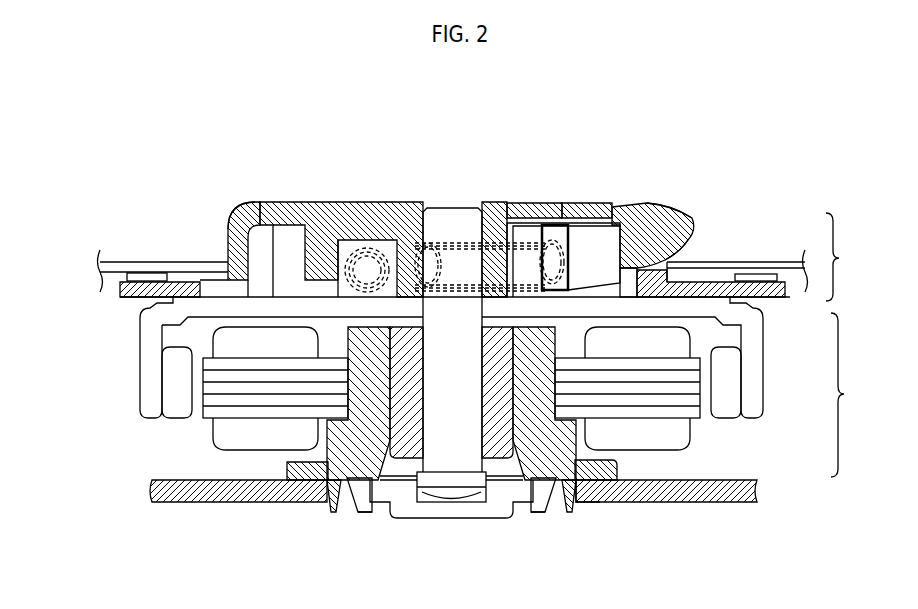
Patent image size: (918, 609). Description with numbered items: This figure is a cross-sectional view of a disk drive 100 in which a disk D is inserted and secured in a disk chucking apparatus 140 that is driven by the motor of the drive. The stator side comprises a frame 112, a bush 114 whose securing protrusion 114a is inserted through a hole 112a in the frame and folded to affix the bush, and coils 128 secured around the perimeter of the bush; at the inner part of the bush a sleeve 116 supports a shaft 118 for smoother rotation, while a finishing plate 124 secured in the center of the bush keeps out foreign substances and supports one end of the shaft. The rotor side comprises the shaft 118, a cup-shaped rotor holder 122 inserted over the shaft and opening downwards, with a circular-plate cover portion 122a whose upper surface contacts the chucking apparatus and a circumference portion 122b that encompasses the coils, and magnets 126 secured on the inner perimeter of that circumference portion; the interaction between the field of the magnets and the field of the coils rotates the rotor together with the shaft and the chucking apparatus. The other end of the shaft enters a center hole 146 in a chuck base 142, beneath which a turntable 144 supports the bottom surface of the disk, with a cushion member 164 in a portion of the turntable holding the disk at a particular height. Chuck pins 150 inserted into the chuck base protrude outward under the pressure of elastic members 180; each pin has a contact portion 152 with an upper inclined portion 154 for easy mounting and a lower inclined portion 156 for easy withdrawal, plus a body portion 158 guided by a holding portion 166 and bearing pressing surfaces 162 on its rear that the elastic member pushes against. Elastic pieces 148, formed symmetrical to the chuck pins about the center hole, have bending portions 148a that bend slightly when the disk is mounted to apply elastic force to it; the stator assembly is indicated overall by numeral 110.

The disk drive 100 is at (822, 129).
The stator 110 is at (857, 395).
The frame 112 is at (280, 492).
The hole 112a is at (588, 492).
The bush 114 is at (353, 463).
The securing protrusion 114a is at (533, 512).
The sleeve 116 is at (403, 483).
The shaft 118 is at (455, 475).
The rotor holder 122 is at (131, 322).
The cover portion 122a is at (195, 320).
The circumference portion 122b is at (168, 378).
The finishing plate 124 is at (497, 518).
The magnets 126 is at (733, 403).
The coils 128 is at (236, 413).
The disk chucking apparatus 140 is at (855, 257).
The chuck base 142 is at (330, 202).
The turntable 144 is at (784, 262).
The center hole 146 is at (441, 207).
The elastic pieces 148 is at (258, 200).
The bending portions 148a is at (229, 222).
The chuck pins 150 is at (600, 238).
The contact portion 152 is at (657, 206).
The upper inclined portion 154 is at (672, 212).
The lower inclined portion 156 is at (690, 231).
The body portion 158 is at (553, 224).
The pressing surfaces 162 is at (535, 222).
The cushion member 164 is at (148, 273).
The holding portion 166 is at (580, 223).
The elastic members 180 is at (364, 228).
The disk D is at (123, 268).